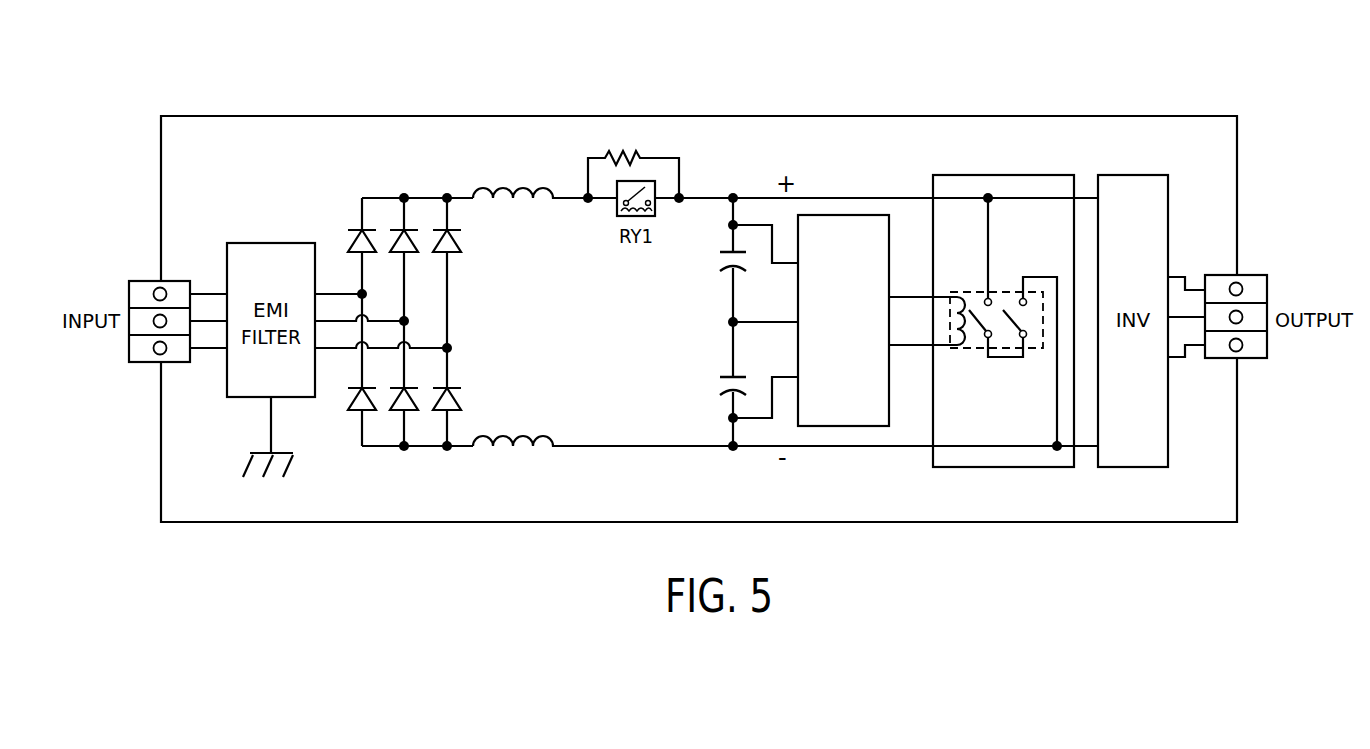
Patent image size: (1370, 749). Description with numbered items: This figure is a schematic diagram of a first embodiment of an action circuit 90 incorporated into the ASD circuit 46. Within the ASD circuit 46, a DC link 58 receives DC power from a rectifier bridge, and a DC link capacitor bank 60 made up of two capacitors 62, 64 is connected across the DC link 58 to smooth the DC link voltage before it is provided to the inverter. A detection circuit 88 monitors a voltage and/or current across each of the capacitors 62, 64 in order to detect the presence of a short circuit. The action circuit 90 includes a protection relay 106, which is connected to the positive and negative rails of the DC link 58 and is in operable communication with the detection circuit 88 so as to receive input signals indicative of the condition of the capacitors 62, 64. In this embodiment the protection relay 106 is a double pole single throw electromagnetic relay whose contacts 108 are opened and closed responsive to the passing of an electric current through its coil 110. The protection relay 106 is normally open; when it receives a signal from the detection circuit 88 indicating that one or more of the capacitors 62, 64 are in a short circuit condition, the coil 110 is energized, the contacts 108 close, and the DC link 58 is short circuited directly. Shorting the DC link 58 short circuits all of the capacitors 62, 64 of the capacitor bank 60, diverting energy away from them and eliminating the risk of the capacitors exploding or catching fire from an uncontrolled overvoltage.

The ASD circuit 46 is at (809, 53).
The DC link 58 is at (605, 447).
The DC link capacitor bank 60 is at (676, 324).
The capacitor 62 is at (720, 260).
The capacitor 64 is at (720, 383).
The detection circuit 88 is at (847, 209).
The action circuit 90 is at (1027, 155).
The protection relay 106 is at (1029, 283).
The contacts 108 is at (1005, 279).
The coil 110 is at (948, 328).